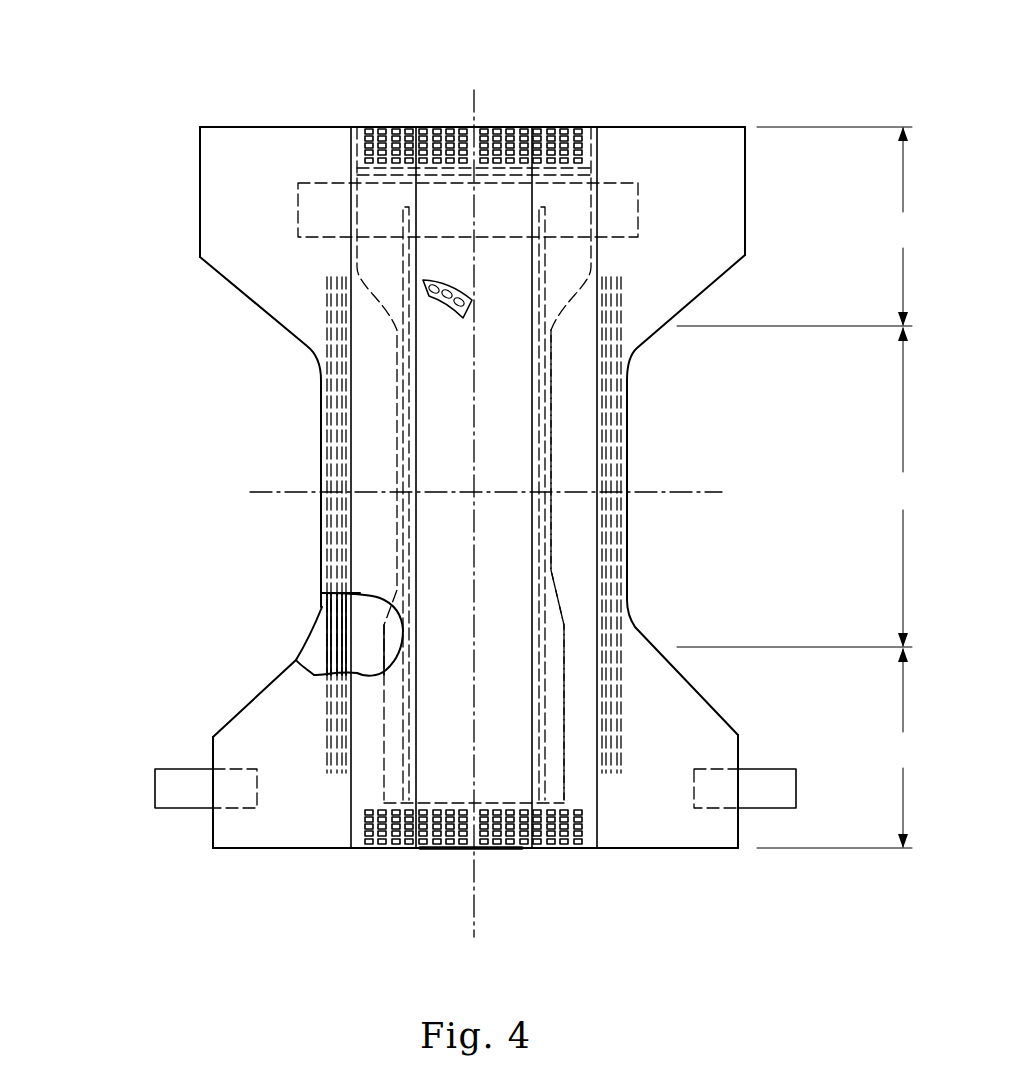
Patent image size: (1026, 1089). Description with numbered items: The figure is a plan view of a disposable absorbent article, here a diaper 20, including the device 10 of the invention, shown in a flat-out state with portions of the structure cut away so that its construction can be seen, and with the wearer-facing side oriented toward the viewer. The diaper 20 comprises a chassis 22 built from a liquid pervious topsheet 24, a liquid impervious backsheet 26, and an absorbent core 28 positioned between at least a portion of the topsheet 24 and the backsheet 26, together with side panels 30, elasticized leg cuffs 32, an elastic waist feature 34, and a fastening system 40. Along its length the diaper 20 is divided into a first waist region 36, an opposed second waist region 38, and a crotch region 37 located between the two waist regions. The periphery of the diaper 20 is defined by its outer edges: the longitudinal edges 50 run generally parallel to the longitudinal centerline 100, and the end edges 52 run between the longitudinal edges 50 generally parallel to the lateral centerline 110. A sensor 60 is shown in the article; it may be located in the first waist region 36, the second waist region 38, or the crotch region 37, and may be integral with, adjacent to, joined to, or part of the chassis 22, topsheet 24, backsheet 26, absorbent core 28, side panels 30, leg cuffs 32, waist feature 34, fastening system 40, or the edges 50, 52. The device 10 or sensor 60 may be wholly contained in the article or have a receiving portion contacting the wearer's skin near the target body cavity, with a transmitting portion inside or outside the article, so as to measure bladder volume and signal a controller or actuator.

The device 10 is at (472, 298).
The diaper 20 is at (180, 124).
The chassis 22 is at (742, 118).
The topsheet 24 is at (503, 385).
The backsheet 26 is at (313, 648).
The absorbent core 28 is at (390, 627).
The side panels 30 is at (282, 158).
The elasticized leg cuffs 32 is at (585, 644).
The elastic waist feature 34 is at (548, 127).
The first waist region 36 is at (797, 226).
The crotch region 37 is at (798, 487).
The second waist region 38 is at (837, 748).
The fastening system 40 is at (184, 817).
The longitudinal edges 50 is at (323, 413).
The end edges 52 is at (432, 127).
The sensor 60 is at (440, 305).
The longitudinal centerline 100 is at (479, 92).
The lateral centerline 110 is at (692, 490).